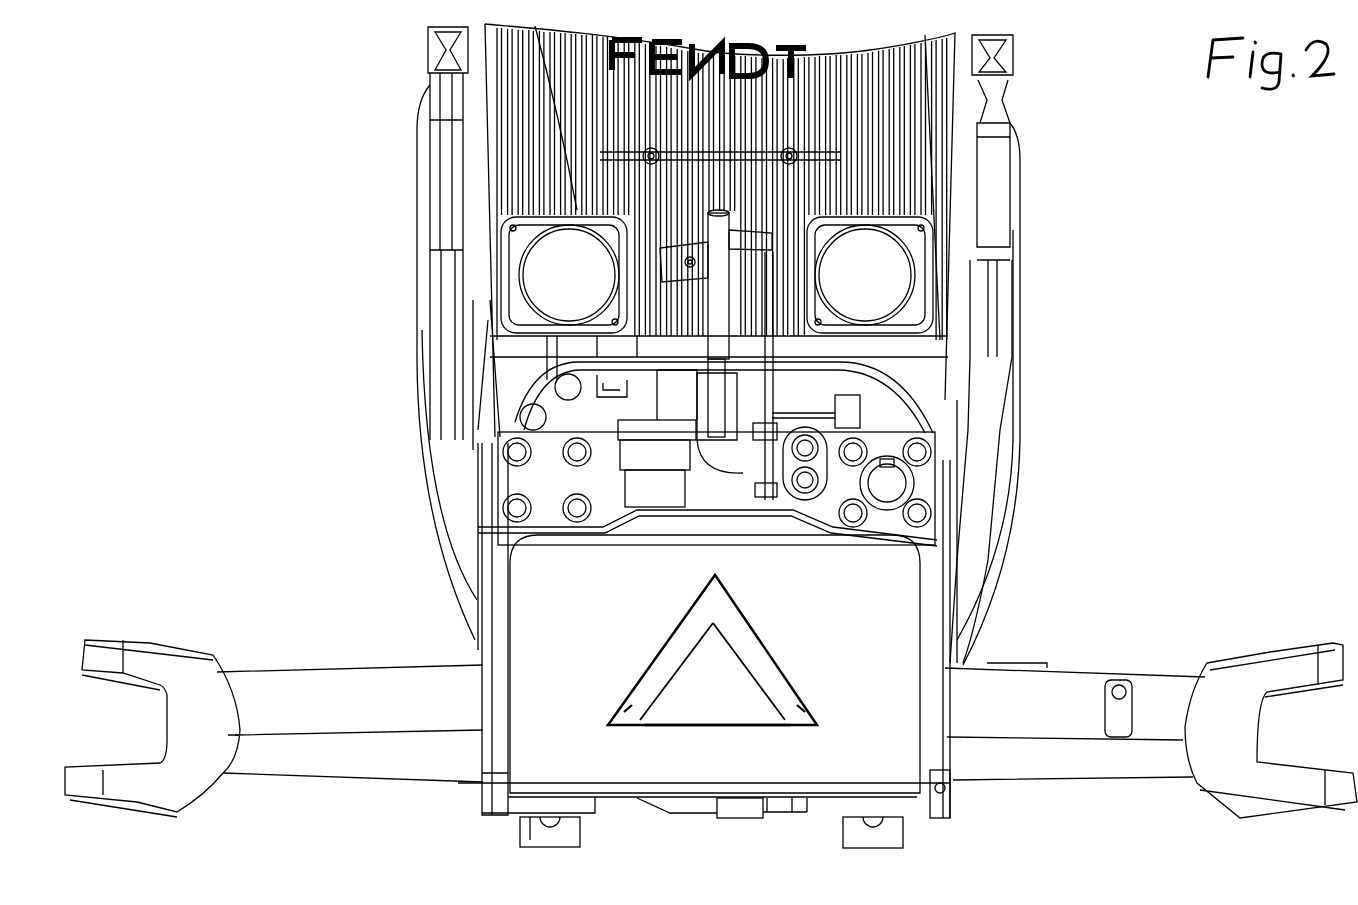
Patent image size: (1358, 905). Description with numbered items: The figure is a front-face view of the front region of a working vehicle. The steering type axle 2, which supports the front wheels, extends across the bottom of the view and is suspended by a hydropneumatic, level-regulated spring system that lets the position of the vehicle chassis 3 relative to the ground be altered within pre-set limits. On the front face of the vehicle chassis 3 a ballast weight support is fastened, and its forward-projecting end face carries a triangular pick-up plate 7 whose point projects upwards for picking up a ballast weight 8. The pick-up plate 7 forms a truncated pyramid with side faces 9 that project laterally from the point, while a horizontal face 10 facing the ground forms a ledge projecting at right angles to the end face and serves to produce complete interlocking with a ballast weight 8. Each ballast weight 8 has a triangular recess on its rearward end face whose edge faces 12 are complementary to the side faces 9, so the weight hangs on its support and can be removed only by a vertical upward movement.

The steering type axle 2 is at (292, 764).
The vehicle chassis 3 is at (508, 482).
The pick-up plate 7 is at (750, 645).
The ballast weight 8 is at (908, 666).
The side faces 9 is at (627, 704).
The horizontal face 10 is at (807, 713).
The edge faces 12 is at (725, 728).